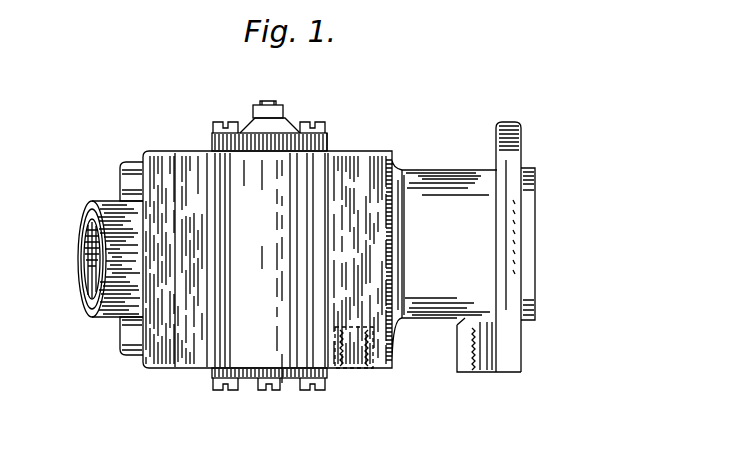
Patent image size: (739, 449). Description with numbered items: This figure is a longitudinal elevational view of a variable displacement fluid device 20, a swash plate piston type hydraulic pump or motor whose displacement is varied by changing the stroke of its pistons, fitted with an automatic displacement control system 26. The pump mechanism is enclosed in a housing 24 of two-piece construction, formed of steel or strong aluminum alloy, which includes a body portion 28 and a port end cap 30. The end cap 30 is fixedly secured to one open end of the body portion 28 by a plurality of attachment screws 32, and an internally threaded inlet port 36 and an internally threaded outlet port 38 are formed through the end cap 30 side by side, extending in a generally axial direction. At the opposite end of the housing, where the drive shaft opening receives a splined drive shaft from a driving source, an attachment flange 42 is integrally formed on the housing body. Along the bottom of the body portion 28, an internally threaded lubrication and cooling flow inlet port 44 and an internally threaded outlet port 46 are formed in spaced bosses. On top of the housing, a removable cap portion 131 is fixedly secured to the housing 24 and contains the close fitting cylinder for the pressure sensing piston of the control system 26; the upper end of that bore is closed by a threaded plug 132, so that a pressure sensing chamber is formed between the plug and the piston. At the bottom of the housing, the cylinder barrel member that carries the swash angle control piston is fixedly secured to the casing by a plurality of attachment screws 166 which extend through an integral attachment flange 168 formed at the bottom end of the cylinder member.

The variable displacement fluid device 20 is at (339, 386).
The housing 24 is at (368, 143).
The control system 26 is at (204, 131).
The body portion 28 is at (432, 171).
The port end cap 30 is at (155, 354).
The attachment screws 32 is at (120, 172).
The inlet port 36 is at (82, 212).
The outlet port 38 is at (88, 280).
The attachment flange 42 is at (522, 140).
The lubrication and cooling flow inlet port 44 is at (481, 380).
The lubrication and cooling flow outlet port 46 is at (360, 357).
The removable cap portion 131 is at (327, 140).
The threaded plug 132 is at (268, 104).
The attachment screws 166 is at (230, 392).
The attachment flange 168 is at (318, 392).